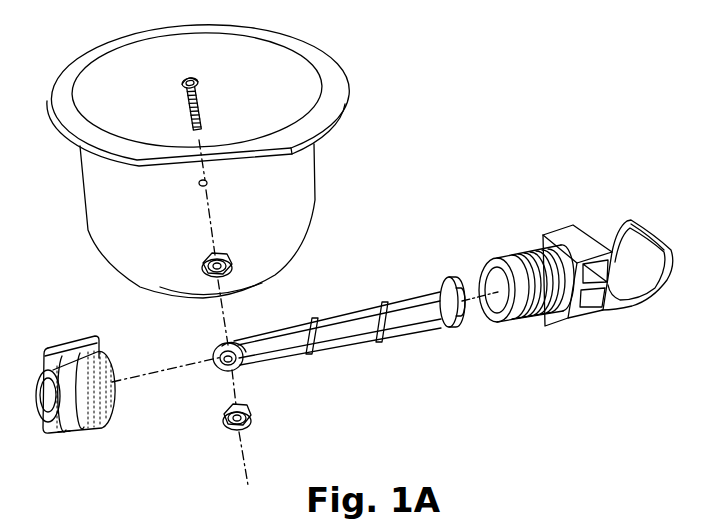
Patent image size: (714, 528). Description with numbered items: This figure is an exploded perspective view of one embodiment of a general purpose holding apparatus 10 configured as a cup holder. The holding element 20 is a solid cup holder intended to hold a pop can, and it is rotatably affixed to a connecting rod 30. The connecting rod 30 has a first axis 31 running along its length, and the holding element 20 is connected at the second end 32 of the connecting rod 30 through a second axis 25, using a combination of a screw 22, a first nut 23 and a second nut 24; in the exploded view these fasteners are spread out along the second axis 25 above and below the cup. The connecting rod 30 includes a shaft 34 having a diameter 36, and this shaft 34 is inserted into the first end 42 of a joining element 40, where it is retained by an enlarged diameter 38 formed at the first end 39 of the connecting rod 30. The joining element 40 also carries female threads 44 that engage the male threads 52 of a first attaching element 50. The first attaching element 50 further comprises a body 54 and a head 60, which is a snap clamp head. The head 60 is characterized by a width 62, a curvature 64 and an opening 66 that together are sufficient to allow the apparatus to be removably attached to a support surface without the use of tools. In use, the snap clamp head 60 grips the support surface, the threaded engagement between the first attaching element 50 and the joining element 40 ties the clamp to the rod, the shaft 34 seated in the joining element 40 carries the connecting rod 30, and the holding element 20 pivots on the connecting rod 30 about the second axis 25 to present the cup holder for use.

The general purpose holding apparatus 10 is at (446, 153).
The holding element 20 is at (108, 205).
The screw 22 is at (205, 104).
The first nut 23 is at (230, 277).
The second nut 24 is at (234, 432).
The second axis 25 is at (246, 465).
The connecting rod 30 is at (326, 327).
The first axis 31 is at (165, 365).
The second end 32 is at (215, 356).
The shaft 34 is at (356, 316).
The diameter 36 is at (382, 345).
The enlarged diameter 38 is at (444, 281).
The first end 39 is at (466, 312).
The joining element 40 is at (83, 413).
The first end 42 is at (44, 400).
The female threads 44 is at (107, 365).
The first attaching element 50 is at (585, 263).
The male threads 52 is at (519, 262).
The body 54 is at (547, 302).
The head 60 is at (600, 312).
The width 62 is at (645, 230).
The curvature 64 is at (647, 297).
The opening 66 is at (613, 237).